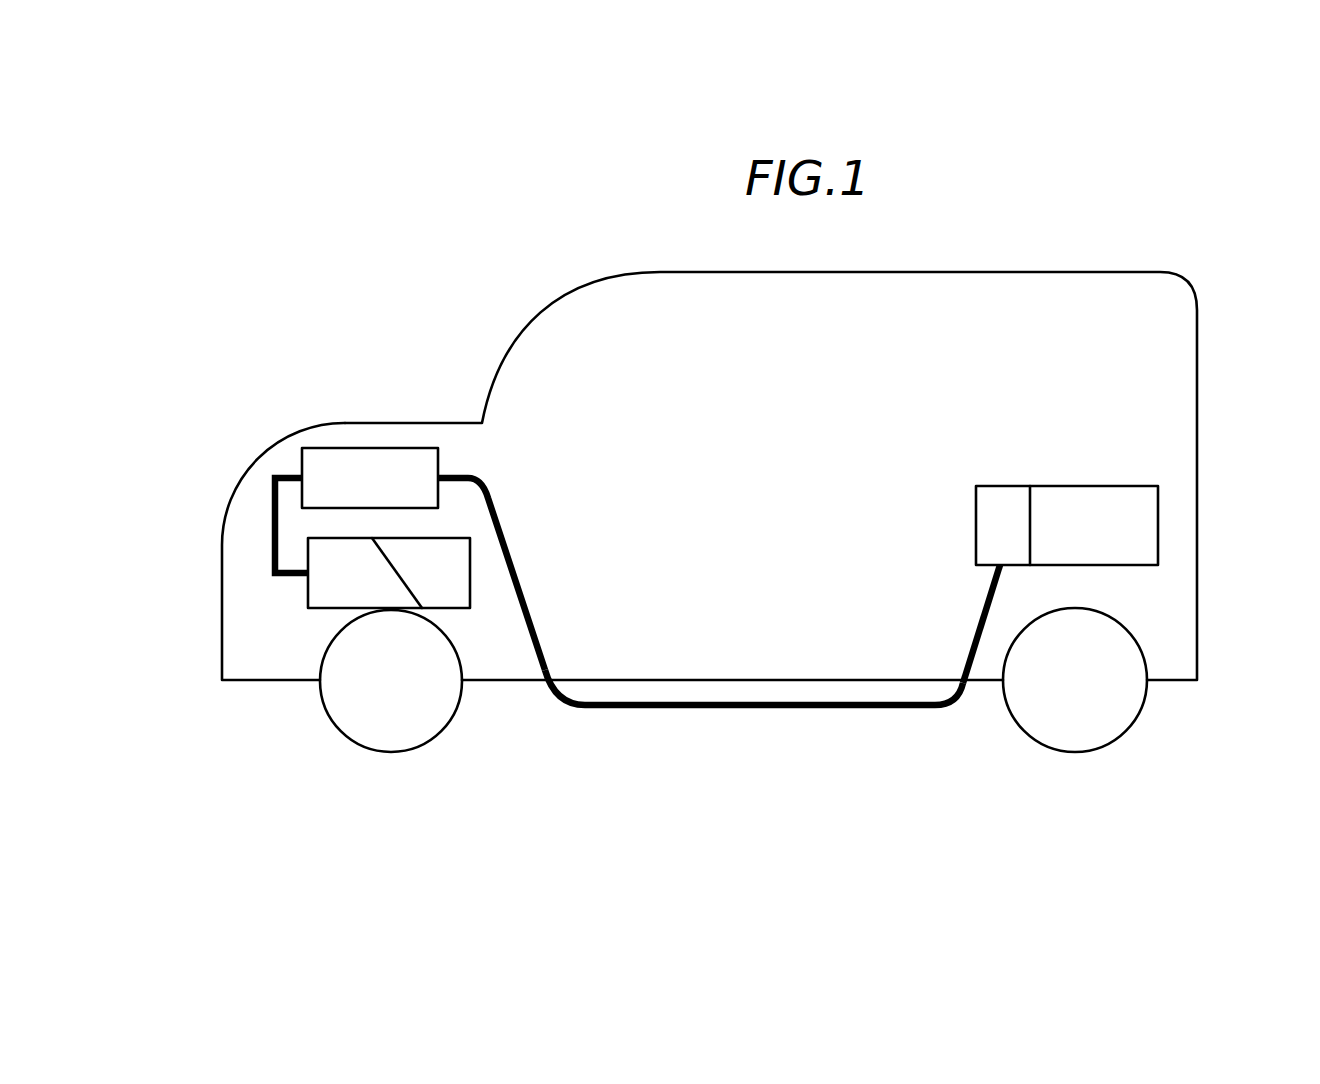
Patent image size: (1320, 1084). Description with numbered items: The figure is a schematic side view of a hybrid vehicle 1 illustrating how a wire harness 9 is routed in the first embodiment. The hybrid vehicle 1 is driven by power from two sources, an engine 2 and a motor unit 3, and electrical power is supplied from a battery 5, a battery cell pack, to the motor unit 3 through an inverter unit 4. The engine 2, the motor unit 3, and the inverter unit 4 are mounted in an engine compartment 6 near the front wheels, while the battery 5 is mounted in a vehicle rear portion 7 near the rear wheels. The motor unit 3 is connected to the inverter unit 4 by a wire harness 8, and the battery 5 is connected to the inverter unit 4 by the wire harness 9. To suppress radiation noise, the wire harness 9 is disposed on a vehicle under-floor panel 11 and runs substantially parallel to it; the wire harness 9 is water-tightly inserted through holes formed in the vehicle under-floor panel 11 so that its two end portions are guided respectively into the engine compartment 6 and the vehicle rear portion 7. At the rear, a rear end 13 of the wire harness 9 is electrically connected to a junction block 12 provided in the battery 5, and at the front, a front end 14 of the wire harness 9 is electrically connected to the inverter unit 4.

The hybrid vehicle 1 is at (386, 301).
The engine 2 is at (455, 595).
The motor unit 3 is at (320, 595).
The inverter unit 4 is at (338, 462).
The battery 5 is at (1100, 502).
The engine compartment 6 is at (237, 637).
The vehicle rear portion 7 is at (1163, 600).
The wire harness 8 is at (263, 506).
The wire harness 9 is at (638, 712).
The vehicle under-floor panel 11 is at (883, 680).
The junction block 12 is at (990, 497).
The rear end 13 is at (985, 593).
The front end 14 is at (473, 480).